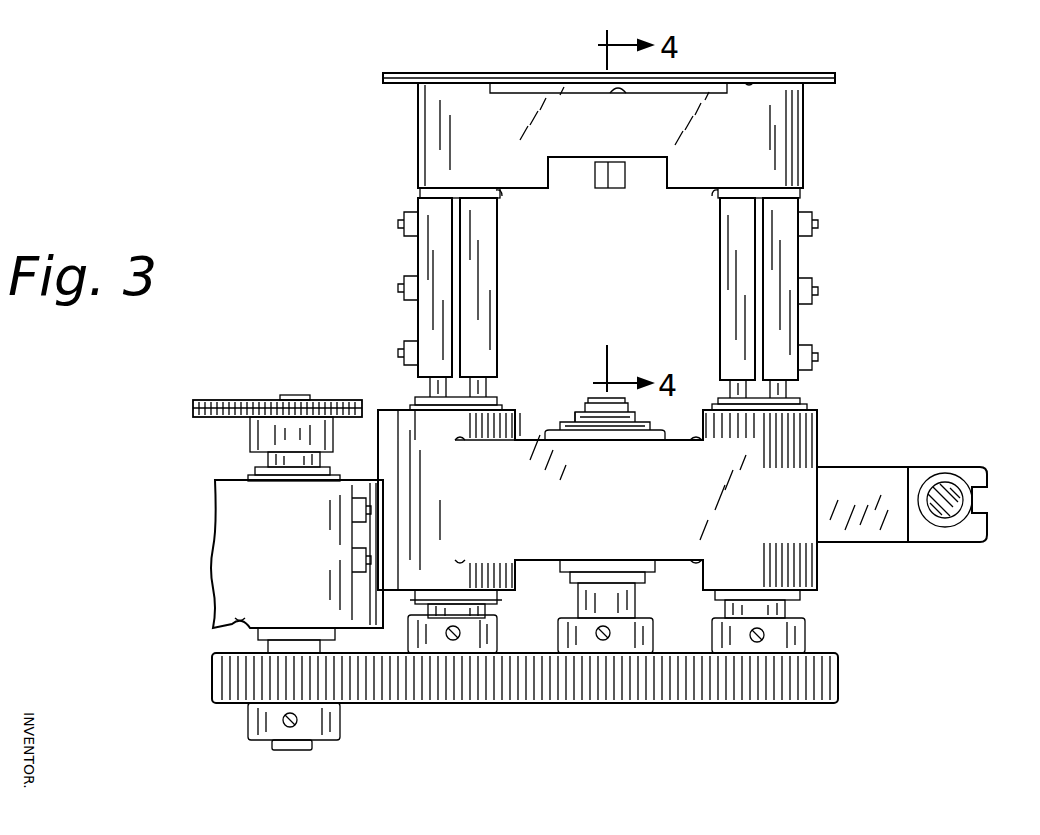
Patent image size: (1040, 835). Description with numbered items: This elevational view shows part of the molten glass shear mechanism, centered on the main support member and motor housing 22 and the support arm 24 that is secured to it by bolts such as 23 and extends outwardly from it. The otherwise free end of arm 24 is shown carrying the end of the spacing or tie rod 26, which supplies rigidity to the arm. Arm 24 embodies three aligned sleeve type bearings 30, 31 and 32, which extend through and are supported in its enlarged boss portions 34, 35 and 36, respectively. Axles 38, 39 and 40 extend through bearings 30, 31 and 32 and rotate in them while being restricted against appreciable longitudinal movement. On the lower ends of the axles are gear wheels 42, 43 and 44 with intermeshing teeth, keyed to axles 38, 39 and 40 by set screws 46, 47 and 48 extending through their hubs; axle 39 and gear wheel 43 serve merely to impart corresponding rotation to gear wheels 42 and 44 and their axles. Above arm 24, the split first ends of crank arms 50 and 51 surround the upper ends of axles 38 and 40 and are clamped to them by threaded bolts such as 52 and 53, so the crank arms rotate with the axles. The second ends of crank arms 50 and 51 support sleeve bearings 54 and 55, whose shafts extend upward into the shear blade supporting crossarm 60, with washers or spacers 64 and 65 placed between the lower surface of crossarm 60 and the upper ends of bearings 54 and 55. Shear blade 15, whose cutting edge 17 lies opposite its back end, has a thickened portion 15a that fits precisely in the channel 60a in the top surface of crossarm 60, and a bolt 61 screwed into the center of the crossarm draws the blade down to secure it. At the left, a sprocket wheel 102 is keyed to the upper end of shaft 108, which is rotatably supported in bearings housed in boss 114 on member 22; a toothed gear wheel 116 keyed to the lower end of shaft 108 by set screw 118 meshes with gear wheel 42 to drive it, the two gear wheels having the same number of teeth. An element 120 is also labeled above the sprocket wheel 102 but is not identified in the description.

The shear blade 15 is at (838, 78).
The thickened portion 15a is at (537, 93).
The cutting edge 17 is at (750, 82).
The shear blade supporting crossarm 60 is at (735, 140).
The channel 60a is at (630, 93).
The bolt 61 is at (611, 190).
The sleeve bearing 54 is at (420, 193).
The sleeve bearing 55 is at (800, 195).
The washer or spacer 64 is at (502, 196).
The washer or spacer 65 is at (712, 196).
The crank arm 50 is at (497, 296).
The crank arm 51 is at (720, 299).
The threaded bolt 52 is at (404, 353).
The threaded bolt 53 is at (812, 358).
The axle 38 is at (430, 390).
The axle 40 is at (790, 392).
The sleeve type bearing 30 is at (500, 400).
The sleeve type bearing 32 is at (805, 406).
The enlarged boss portion 34 is at (516, 430).
The enlarged boss portion 35 is at (660, 440).
The enlarged boss portion 36 is at (815, 440).
The sleeve type bearing 31 is at (630, 430).
The axle or shaft 39 is at (585, 414).
The support arm 24 is at (623, 515).
The spacing or tie rod 26 is at (950, 497).
The main support member and motor housing 22 is at (259, 561).
The bolt 23 is at (352, 560).
The gear 120 is at (197, 400).
The sprocket wheel 102 is at (264, 400).
The axle or shaft 108 is at (268, 460).
The boss 114 is at (245, 618).
The toothed gear wheel 116 is at (212, 674).
The set screw 118 is at (295, 720).
The set screw 46 is at (460, 633).
The set screw 47 is at (610, 633).
The set screw 48 is at (765, 634).
The gear wheel 42 is at (445, 690).
The gear wheel 43 is at (595, 690).
The gear wheel 44 is at (790, 690).